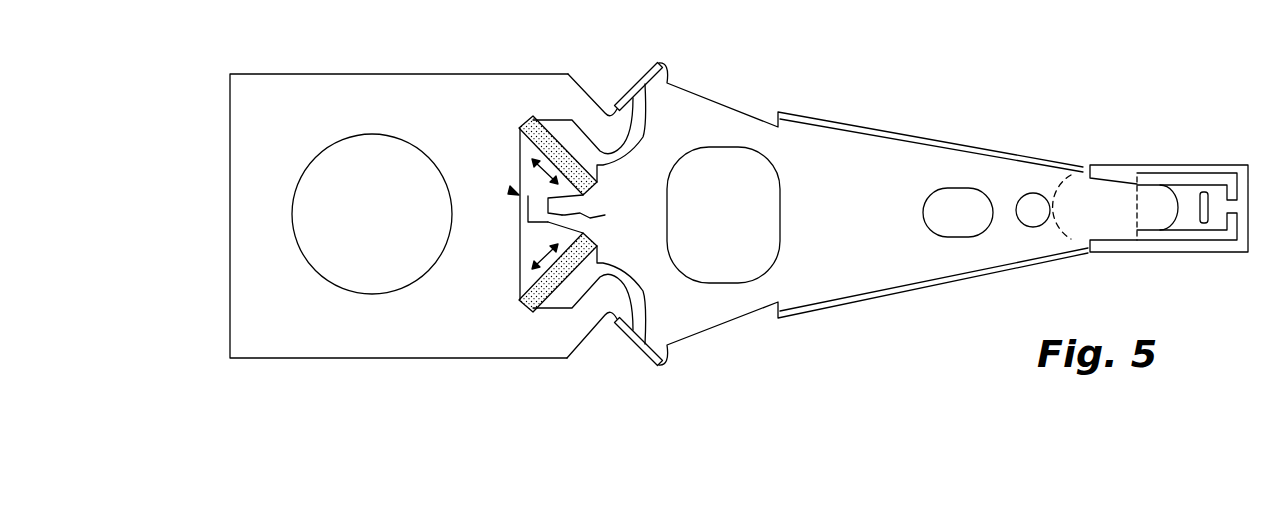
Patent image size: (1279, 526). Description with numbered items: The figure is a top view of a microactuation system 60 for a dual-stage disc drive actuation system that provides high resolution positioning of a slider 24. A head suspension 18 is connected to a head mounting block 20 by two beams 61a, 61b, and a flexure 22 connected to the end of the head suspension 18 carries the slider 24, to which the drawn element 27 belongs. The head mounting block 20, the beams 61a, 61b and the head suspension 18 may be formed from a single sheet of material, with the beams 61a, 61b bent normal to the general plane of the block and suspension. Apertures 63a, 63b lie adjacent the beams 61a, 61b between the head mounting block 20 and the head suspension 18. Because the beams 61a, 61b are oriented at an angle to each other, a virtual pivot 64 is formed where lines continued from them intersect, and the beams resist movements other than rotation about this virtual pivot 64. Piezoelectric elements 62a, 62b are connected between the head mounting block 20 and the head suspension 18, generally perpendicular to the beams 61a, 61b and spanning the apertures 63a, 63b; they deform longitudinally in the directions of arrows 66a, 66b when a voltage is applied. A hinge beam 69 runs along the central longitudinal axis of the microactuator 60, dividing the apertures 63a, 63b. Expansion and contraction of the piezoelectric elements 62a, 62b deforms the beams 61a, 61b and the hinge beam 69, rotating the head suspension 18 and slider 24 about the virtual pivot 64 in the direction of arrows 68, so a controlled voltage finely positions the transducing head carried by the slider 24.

The microactuation system 60 is at (228, 66).
The head mounting block 20 is at (431, 74).
The head suspension 18 is at (893, 127).
The flexure 22 is at (1140, 165).
The slider 24 is at (1192, 180).
The slider post 27 is at (1213, 227).
The beam 61a is at (640, 86).
The beam 61b is at (634, 352).
The piezoelectric element 62a is at (520, 124).
The piezoelectric element 62b is at (520, 302).
The aperture 63a is at (565, 130).
The aperture 63b is at (580, 288).
The virtual pivot 64 is at (500, 206).
The arrow 66a is at (528, 166).
The arrow 66b is at (528, 262).
The arrows 68 is at (514, 192).
The hinge beam 69 is at (602, 215).